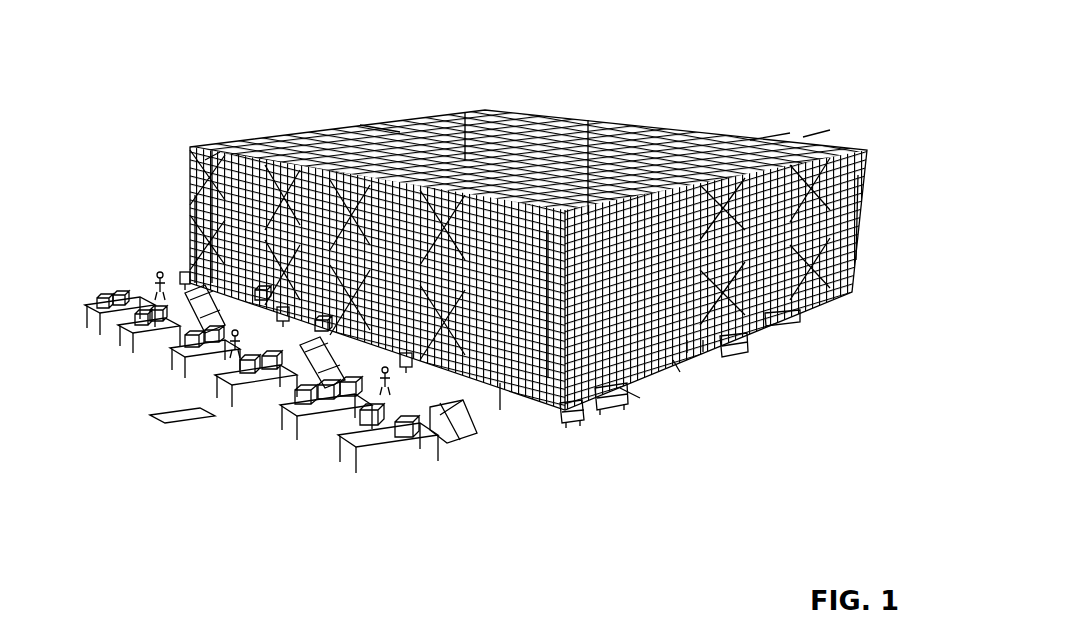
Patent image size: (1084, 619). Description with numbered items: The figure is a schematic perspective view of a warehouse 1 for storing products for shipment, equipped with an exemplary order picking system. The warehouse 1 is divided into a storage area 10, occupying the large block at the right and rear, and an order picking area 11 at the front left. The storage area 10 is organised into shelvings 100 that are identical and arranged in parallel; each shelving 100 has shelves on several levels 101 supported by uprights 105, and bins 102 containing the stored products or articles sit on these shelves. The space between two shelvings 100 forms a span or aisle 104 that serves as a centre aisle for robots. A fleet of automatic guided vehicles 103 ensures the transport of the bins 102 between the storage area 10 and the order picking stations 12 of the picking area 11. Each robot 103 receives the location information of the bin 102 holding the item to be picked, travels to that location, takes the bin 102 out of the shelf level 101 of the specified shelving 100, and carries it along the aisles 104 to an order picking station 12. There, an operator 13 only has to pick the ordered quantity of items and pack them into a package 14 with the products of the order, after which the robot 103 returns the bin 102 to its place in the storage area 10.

The warehouse 1 is at (232, 106).
The storage area 10 is at (748, 488).
The order picking area 11 is at (492, 520).
The order picking station 12 is at (267, 413).
The operator 13 is at (160, 273).
The package 14 is at (97, 298).
The shelving 100 is at (187, 151).
The shelf level 101 is at (195, 197).
The bin 102 is at (373, 125).
The automatic guided vehicle 103 is at (567, 428).
The aisle 104 is at (673, 360).
The upright 105 is at (212, 157).